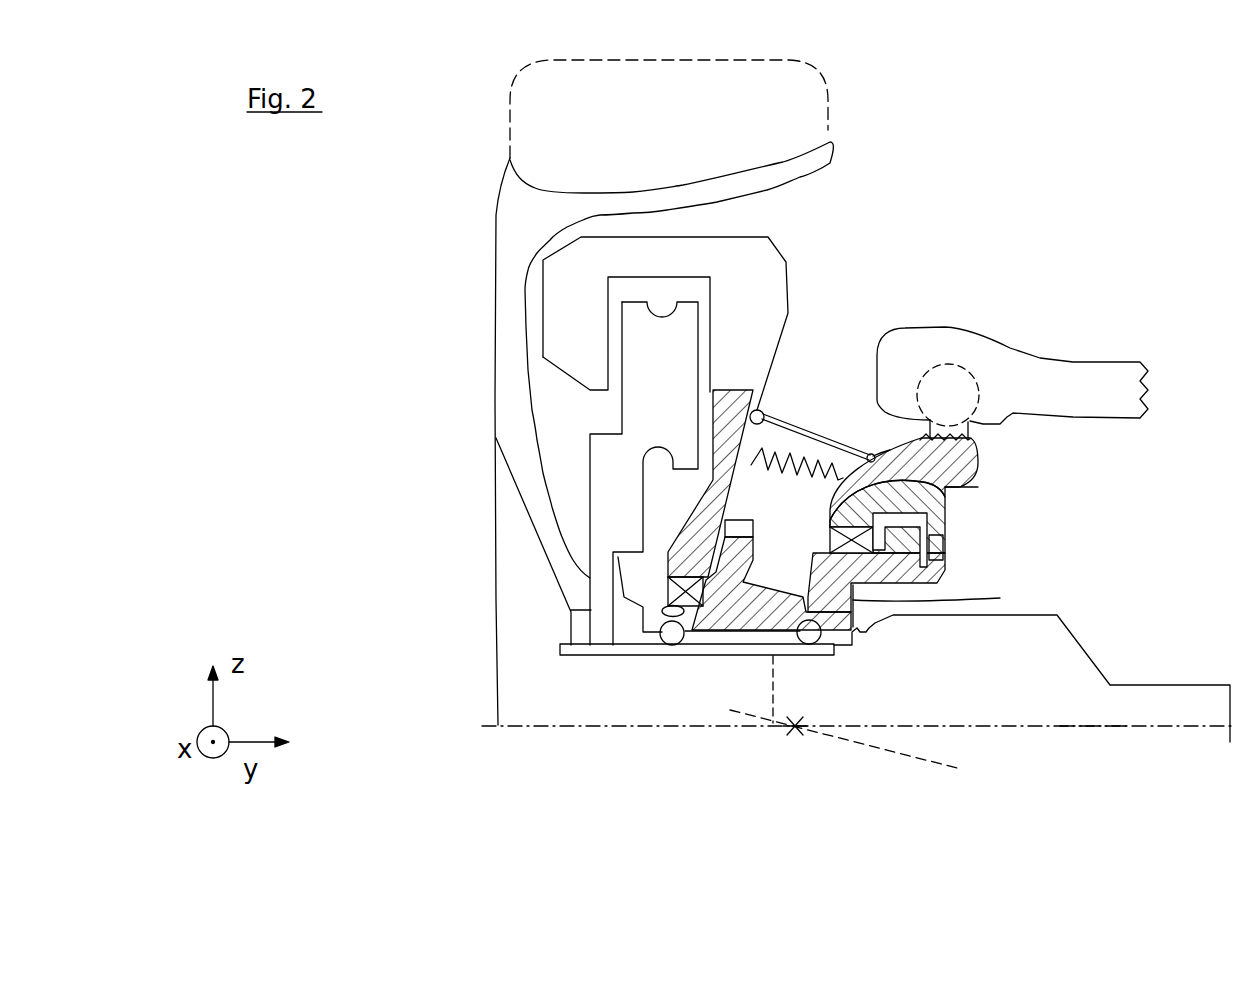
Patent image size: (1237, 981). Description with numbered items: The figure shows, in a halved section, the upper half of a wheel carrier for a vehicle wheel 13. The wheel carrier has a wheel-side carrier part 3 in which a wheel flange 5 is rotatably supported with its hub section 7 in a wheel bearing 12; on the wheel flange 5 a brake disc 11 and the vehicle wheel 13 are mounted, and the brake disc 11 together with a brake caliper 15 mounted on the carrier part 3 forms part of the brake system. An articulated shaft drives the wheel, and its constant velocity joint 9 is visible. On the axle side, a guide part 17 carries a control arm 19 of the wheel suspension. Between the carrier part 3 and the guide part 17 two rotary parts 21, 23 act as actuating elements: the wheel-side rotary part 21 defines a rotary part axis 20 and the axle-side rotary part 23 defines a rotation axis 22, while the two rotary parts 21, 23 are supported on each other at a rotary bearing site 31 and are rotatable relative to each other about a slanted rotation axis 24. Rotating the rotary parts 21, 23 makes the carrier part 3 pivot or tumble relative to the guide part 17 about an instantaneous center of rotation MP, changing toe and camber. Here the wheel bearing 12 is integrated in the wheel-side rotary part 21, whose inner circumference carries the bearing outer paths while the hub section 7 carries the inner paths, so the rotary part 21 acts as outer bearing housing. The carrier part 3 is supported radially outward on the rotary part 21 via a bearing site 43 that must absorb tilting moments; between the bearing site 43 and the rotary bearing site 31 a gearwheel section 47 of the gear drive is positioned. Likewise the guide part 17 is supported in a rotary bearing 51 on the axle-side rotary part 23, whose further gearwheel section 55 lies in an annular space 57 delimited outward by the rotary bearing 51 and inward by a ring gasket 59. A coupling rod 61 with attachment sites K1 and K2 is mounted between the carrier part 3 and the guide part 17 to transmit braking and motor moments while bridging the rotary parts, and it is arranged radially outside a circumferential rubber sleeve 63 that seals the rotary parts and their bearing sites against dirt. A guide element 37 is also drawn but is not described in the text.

The carrier part 3 is at (700, 507).
The wheel flange 5 is at (623, 620).
The hub section 7 is at (692, 650).
The constant velocity joint 9 is at (1057, 615).
The brake disc 11 is at (683, 377).
The wheel bearing 12 is at (672, 637).
The vehicle wheel 13 is at (493, 282).
The brake caliper 15 is at (783, 251).
The guide part 17 is at (978, 445).
The control arm 19 is at (1110, 360).
The rotary part axis 20 is at (618, 727).
The wheel-side rotary part 21 is at (745, 570).
The rotation axis 22 is at (1092, 730).
The axle-side rotary part 23 is at (817, 553).
The rotation axis 24 is at (890, 750).
The rotary bearing site 31 is at (853, 592).
The guide rail 37 is at (728, 633).
The bearing site 43 is at (665, 591).
The gearwheel section 47 is at (737, 517).
The rotary bearing 51 is at (978, 487).
The gearwheel section 55 is at (945, 533).
The annular space 57 is at (945, 510).
The ring gasket 59 is at (940, 553).
The coupling rod 61 is at (796, 424).
The rubber sleeve 63 is at (793, 452).
The attachment site K1 is at (877, 453).
The attachment site K2 is at (760, 412).
The instantaneous center of rotation MP is at (798, 712).